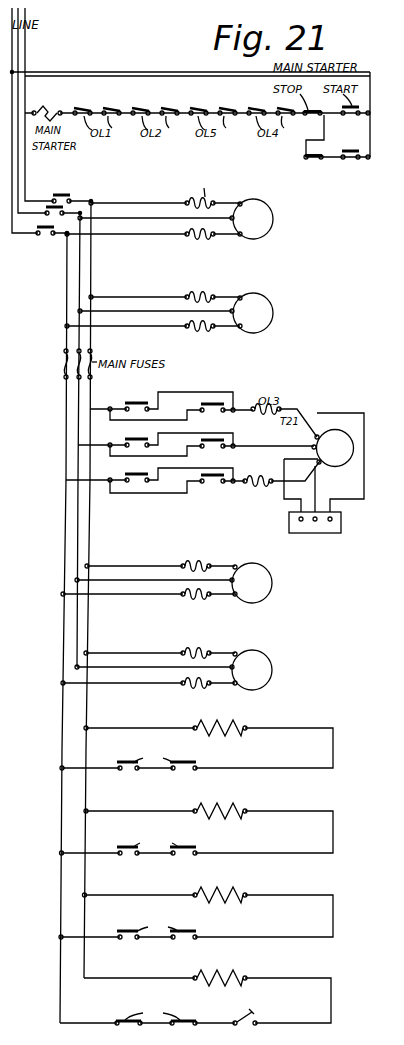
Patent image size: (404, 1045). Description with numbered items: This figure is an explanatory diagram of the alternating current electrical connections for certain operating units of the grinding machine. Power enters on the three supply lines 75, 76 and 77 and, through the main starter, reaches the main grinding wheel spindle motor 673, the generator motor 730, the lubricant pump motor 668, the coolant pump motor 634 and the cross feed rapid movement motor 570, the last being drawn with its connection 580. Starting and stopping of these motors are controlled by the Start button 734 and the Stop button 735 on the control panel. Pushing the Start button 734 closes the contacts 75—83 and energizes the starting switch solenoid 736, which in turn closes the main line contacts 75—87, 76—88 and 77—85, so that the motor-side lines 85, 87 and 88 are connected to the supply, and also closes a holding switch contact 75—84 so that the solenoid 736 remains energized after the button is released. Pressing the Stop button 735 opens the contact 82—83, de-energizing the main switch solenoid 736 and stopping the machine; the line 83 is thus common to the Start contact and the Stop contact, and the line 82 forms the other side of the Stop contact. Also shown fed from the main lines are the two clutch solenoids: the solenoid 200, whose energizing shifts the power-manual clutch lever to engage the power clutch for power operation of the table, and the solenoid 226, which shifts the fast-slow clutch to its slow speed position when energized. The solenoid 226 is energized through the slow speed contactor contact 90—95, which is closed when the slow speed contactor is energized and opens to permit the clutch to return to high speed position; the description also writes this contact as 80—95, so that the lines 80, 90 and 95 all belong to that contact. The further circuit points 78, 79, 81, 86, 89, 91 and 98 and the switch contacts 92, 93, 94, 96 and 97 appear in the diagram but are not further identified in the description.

The circuit line 75 is at (70, 72).
The circuit line 76 is at (26, 58).
The circuit line 77 is at (38, 110).
The overload relay contact 78 is at (75, 109).
The overload relay contact 79 is at (123, 104).
The circuit line 80 is at (178, 104).
The overload relay contact 81 is at (236, 104).
The circuit line 82 is at (297, 111).
The circuit line 83 is at (295, 170).
The circuit line 84 is at (347, 163).
The circuit line 85 is at (96, 348).
The power conductor 86 is at (77, 398).
The circuit line 87 is at (66, 348).
The circuit line 88 is at (66, 384).
The power conductor 89 is at (100, 406).
The circuit line 90 is at (181, 410).
The conductor 91 is at (242, 481).
The cycle switch contact 92 is at (157, 769).
The cycle switch contact 93 is at (207, 782).
The hot water switch contact 94 is at (235, 851).
The circuit line 95 is at (228, 935).
The thermostat switch 96 is at (255, 1027).
The thermostat switch contact 97 is at (175, 1015).
The power conductor 98 is at (64, 437).
The solenoid 200 is at (236, 813).
The solenoid 226 is at (236, 897).
The cross feed rapid movement motor 570 is at (324, 462).
The terminal block 580 is at (323, 527).
The coolant pump motor 634 is at (255, 670).
The lubricant pump motor 668 is at (255, 583).
The main grinding wheel spindle motor 673 is at (256, 219).
The generator motor 730 is at (256, 313).
The Start button 734 is at (349, 123).
The Stop button 735 is at (308, 135).
The starting switch solenoid 736 is at (52, 100).